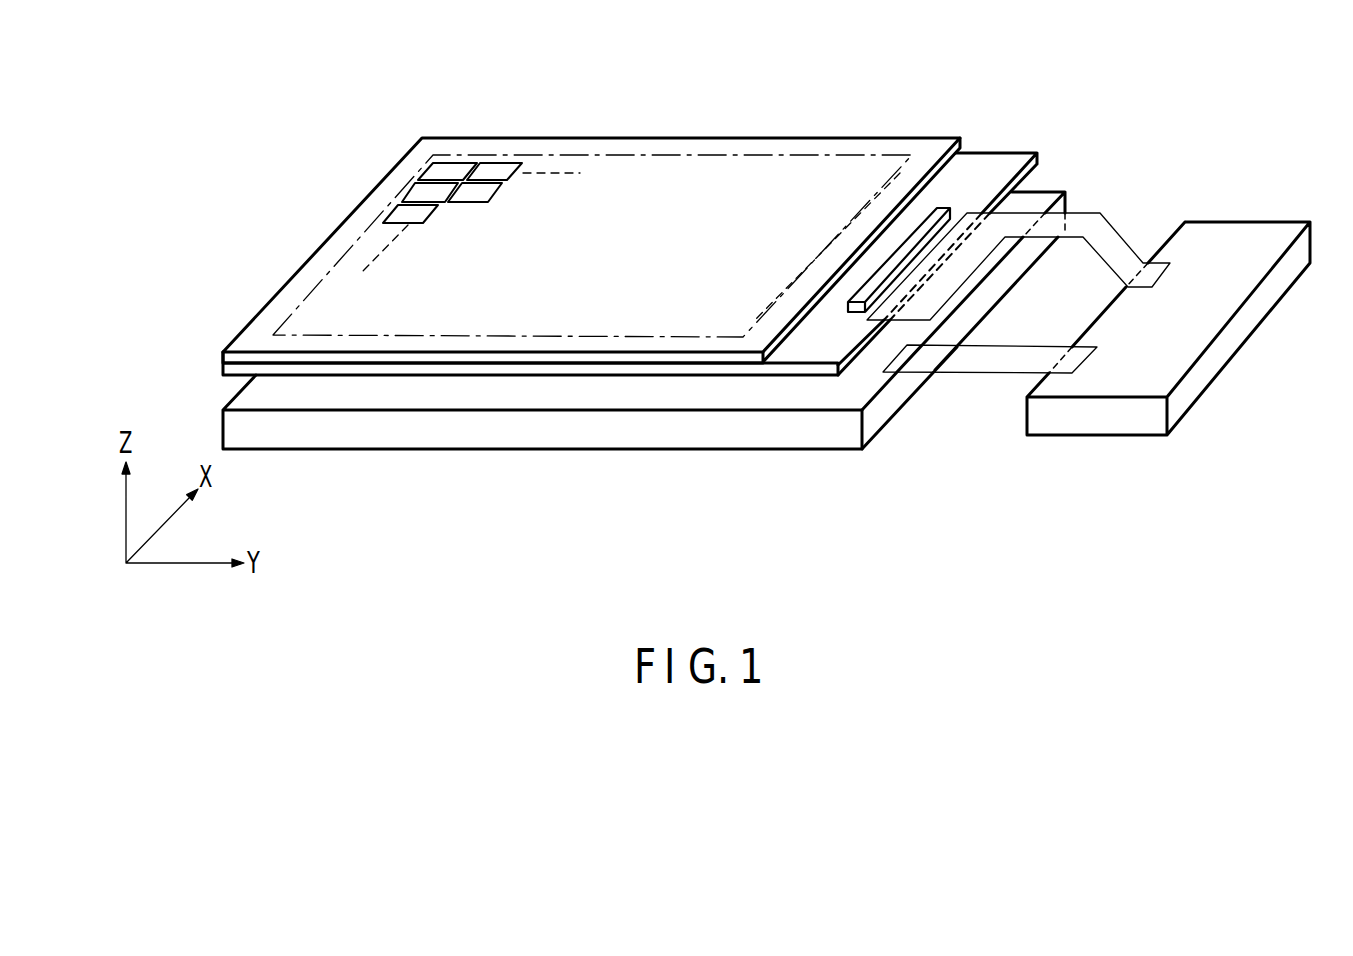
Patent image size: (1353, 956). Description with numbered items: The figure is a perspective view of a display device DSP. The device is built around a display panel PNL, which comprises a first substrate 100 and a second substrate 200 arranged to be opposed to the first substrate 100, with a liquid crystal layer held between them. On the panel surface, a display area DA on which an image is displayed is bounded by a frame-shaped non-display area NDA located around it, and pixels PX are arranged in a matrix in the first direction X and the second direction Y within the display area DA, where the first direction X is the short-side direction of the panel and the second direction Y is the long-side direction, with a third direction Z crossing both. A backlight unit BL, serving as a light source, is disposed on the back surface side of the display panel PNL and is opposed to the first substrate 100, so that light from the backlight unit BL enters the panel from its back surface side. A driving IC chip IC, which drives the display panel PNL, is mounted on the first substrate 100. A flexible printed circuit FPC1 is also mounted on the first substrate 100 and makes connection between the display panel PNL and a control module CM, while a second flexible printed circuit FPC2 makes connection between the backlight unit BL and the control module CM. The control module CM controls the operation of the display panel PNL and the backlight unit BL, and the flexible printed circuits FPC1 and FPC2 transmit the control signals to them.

The display device DSP is at (297, 101).
The display panel PNL is at (219, 363).
The first substrate 100 is at (998, 153).
The second substrate 200 is at (926, 138).
The display area DA is at (614, 164).
The non-display area NDA is at (682, 143).
The pixels PX is at (413, 190).
The driving IC chip IC is at (853, 313).
The flexible printed circuit FPC1 is at (1088, 213).
The flexible printed circuit FPC2 is at (978, 374).
The control module CM is at (1240, 222).
The backlight unit BL is at (782, 452).